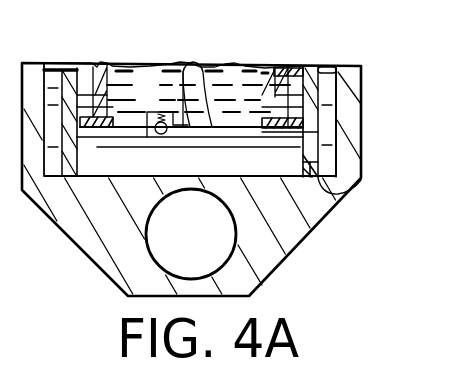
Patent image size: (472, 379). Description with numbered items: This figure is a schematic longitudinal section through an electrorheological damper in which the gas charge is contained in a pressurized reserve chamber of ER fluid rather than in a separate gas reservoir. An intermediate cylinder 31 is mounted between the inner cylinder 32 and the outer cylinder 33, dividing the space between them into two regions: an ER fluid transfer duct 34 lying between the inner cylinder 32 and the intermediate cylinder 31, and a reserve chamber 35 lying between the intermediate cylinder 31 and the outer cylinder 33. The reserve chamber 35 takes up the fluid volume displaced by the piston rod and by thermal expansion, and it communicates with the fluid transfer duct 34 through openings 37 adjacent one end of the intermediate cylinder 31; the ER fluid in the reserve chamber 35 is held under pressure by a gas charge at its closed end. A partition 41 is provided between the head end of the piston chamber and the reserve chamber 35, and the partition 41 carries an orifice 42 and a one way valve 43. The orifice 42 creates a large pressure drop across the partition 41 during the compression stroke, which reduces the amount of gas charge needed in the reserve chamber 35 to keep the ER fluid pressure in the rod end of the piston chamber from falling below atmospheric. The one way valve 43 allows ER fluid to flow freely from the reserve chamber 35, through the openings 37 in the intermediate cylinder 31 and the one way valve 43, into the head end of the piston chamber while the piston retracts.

The intermediate cylinder 31 is at (338, 72).
The inner cylinder 32 is at (286, 77).
The outer cylinder 33 is at (348, 138).
The ER fluid transfer duct 34 is at (82, 72).
The reserve chamber 35 is at (337, 109).
The openings 37 is at (262, 112).
The partition 41 is at (238, 125).
The orifice 42 is at (205, 56).
The one way valve 43 is at (153, 110).